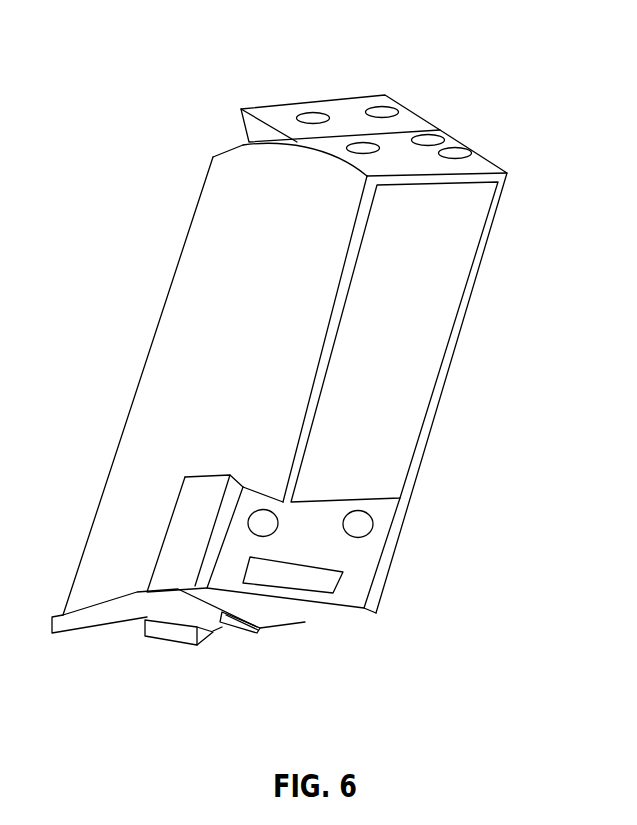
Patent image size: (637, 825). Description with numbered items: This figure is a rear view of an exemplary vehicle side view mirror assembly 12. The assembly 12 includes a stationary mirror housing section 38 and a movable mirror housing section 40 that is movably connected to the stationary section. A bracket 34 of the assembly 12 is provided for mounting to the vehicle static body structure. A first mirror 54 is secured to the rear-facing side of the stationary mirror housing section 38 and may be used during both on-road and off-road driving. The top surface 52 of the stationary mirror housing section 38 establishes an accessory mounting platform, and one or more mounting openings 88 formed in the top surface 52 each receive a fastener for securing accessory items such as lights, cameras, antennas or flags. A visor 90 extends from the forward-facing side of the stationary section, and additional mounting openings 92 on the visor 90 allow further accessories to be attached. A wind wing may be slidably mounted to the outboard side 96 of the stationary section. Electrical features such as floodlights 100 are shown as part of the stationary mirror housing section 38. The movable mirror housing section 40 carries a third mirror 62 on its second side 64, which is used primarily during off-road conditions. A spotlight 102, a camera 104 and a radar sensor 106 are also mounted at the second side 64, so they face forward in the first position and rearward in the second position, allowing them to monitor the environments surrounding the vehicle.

The side view mirror assembly 12 is at (432, 57).
The bracket 34 is at (140, 607).
The stationary mirror housing section 38 is at (185, 330).
The movable mirror housing section 40 is at (389, 538).
The top surface 52 is at (407, 158).
The first mirror 54 is at (425, 313).
The third mirror 62 is at (322, 547).
The second side 64 is at (212, 557).
The mounting openings 88 is at (430, 138).
The visor 90 is at (272, 113).
The additional mounting openings 92 is at (313, 117).
The outboard side 96 is at (493, 235).
The floodlights 100 is at (238, 633).
The spotlight 102 is at (252, 525).
The camera 104 is at (373, 522).
The radar sensor 106 is at (298, 590).